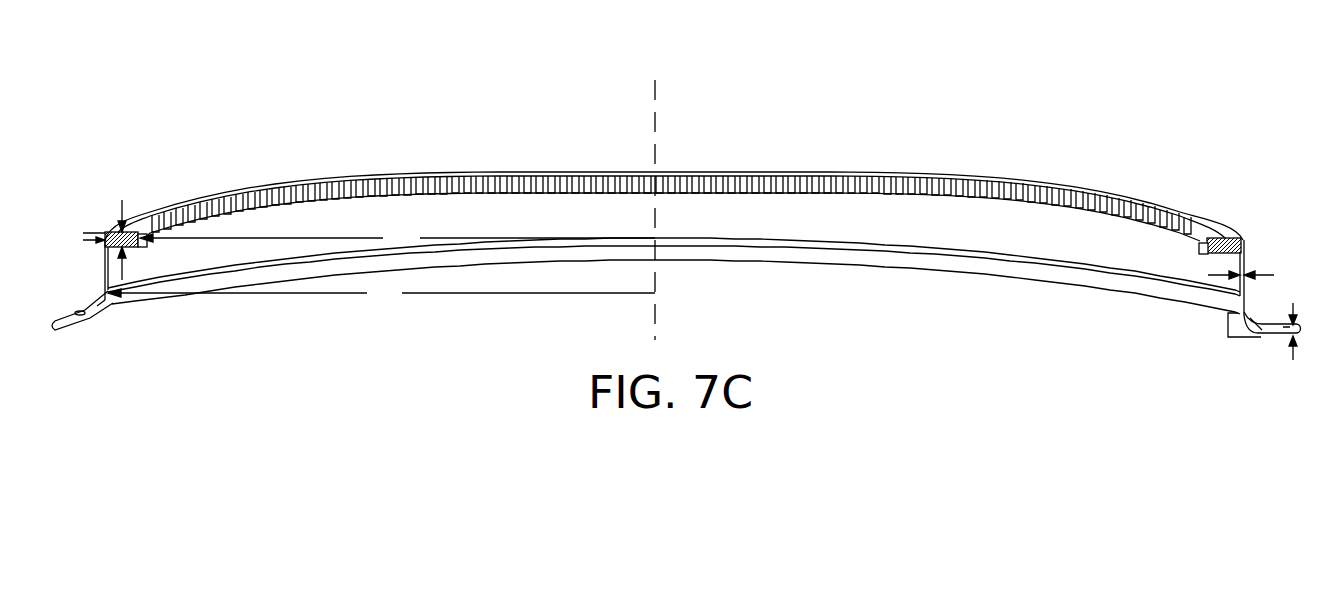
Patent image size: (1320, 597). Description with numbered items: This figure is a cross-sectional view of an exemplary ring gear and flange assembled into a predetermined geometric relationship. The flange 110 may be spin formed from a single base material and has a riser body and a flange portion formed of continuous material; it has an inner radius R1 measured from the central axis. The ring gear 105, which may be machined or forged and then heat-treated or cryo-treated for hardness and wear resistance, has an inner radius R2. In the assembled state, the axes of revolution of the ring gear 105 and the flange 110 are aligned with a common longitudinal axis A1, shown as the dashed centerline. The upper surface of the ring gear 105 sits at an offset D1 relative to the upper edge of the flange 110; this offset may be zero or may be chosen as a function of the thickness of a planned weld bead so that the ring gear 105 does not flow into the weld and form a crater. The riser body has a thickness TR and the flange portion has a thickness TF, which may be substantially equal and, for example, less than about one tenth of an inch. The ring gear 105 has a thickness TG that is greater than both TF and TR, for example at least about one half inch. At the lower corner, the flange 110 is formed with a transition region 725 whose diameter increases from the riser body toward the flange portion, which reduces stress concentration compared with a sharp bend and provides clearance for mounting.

The ring gear 105 is at (888, 176).
The flange 110 is at (66, 318).
The transition region 725 is at (1227, 326).
The longitudinal axis A1 is at (652, 100).
The offset D1 is at (82, 237).
The inner radius of the flange R1 is at (381, 294).
The inner radius of the ring gear R2 is at (397, 239).
The ring gear thickness TG is at (125, 226).
The riser body thickness TR is at (1255, 277).
The flange thickness TF is at (1295, 350).